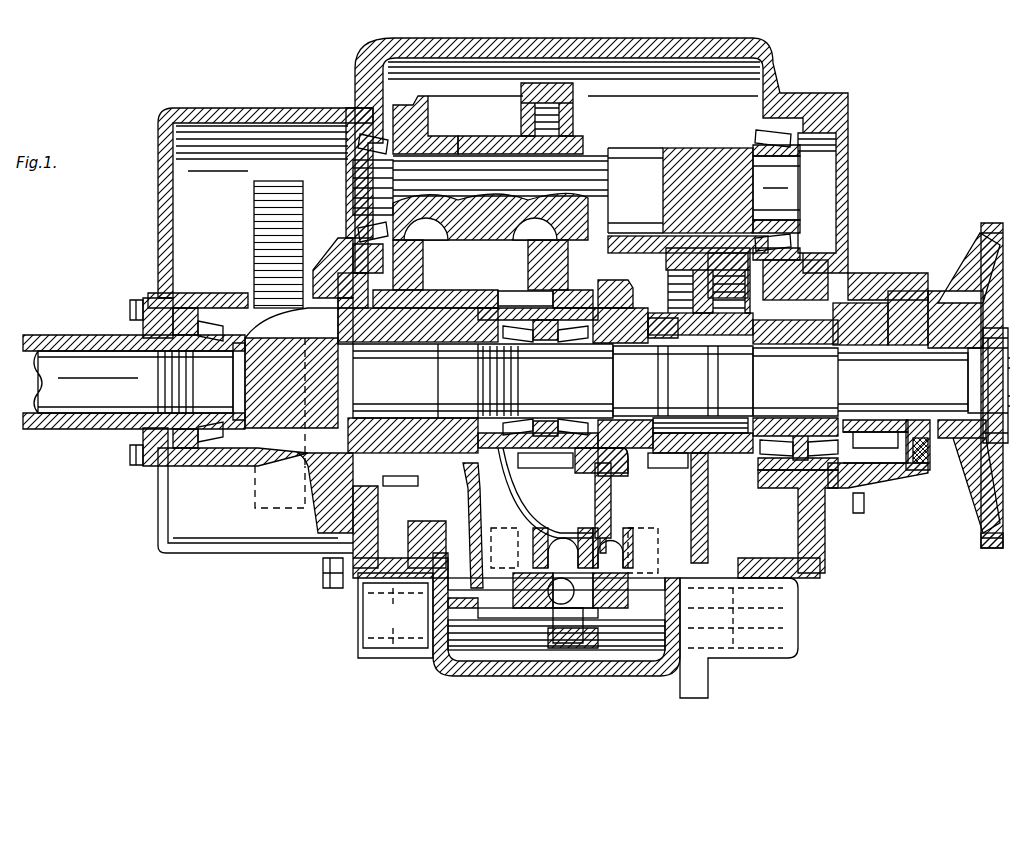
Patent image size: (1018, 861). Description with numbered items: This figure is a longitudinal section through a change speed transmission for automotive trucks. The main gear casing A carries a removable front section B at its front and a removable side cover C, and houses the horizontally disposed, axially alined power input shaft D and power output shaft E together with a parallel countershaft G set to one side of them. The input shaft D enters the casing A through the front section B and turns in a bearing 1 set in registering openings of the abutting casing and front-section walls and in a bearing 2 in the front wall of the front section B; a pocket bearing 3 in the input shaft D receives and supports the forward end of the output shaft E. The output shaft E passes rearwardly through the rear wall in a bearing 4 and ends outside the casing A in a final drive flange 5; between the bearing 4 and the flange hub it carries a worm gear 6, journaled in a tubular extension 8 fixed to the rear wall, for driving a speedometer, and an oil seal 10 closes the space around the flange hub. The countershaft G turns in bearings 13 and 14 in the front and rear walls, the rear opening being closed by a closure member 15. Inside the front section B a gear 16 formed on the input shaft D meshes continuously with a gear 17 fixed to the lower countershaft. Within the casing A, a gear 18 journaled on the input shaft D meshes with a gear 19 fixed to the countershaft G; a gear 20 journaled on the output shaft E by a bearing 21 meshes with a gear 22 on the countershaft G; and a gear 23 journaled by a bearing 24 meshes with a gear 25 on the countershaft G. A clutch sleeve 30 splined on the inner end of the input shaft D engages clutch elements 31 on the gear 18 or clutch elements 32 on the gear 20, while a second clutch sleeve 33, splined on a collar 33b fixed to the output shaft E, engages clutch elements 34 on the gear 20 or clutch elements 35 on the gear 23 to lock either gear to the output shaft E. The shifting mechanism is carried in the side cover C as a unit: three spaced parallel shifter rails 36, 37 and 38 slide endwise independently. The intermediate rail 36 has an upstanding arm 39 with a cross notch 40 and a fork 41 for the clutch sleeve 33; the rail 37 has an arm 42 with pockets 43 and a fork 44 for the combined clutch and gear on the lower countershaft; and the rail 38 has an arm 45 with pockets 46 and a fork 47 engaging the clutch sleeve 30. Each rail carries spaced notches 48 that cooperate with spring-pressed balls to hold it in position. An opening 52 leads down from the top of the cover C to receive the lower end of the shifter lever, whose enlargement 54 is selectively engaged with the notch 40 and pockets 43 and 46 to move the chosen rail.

The main gear casing A is at (485, 30).
The removable front section B is at (238, 100).
The removable side cover C is at (645, 680).
The power input shaft D is at (72, 358).
The power output shaft E is at (928, 345).
The countershaft G is at (475, 160).
The bearing 1 is at (310, 508).
The bearing 2 is at (208, 440).
The pocket bearing 3 is at (392, 345).
The bearing 4 is at (812, 408).
The final drive flange 5 is at (980, 542).
The worm gear 6 is at (872, 476).
The tubular extension 8 is at (895, 470).
The oil seal 10 is at (920, 455).
The bearing 13 is at (352, 112).
The bearing 14 is at (772, 120).
The closure member 15 is at (846, 210).
The gear 16 is at (290, 420).
The gear 17 is at (256, 226).
The second gear 18 is at (400, 478).
The gear 19 is at (400, 92).
The gear 20 is at (548, 462).
The bearing 21 is at (512, 405).
The second gear 22 is at (540, 65).
The second gear 23 is at (660, 250).
The bearing 24 is at (682, 352).
The third gear 25 is at (700, 132).
The clutch sleeve 30 is at (482, 300).
The clutch elements 31 is at (430, 294).
The clutch elements 32 is at (495, 300).
The second clutch sleeve 33 is at (620, 460).
The collar 33b is at (628, 302).
The clutch elements 34 is at (590, 282).
The clutch elements 35 is at (652, 450).
The shifter rail 36 is at (475, 640).
The shifter rail 37 is at (730, 535).
The shifter rail 38 is at (432, 660).
The upstanding arm 39 is at (580, 605).
The cross notch 40 is at (558, 620).
The fork 41 is at (603, 490).
The upstanding arm 42 is at (568, 520).
The pockets 43 is at (630, 505).
The fork 44 is at (510, 478).
The upstanding arm 45 is at (530, 612).
The pockets 46 is at (520, 630).
The fork 47 is at (388, 478).
The notches 48 is at (700, 632).
The opening 52 is at (555, 600).
The enlargement 54 is at (545, 645).